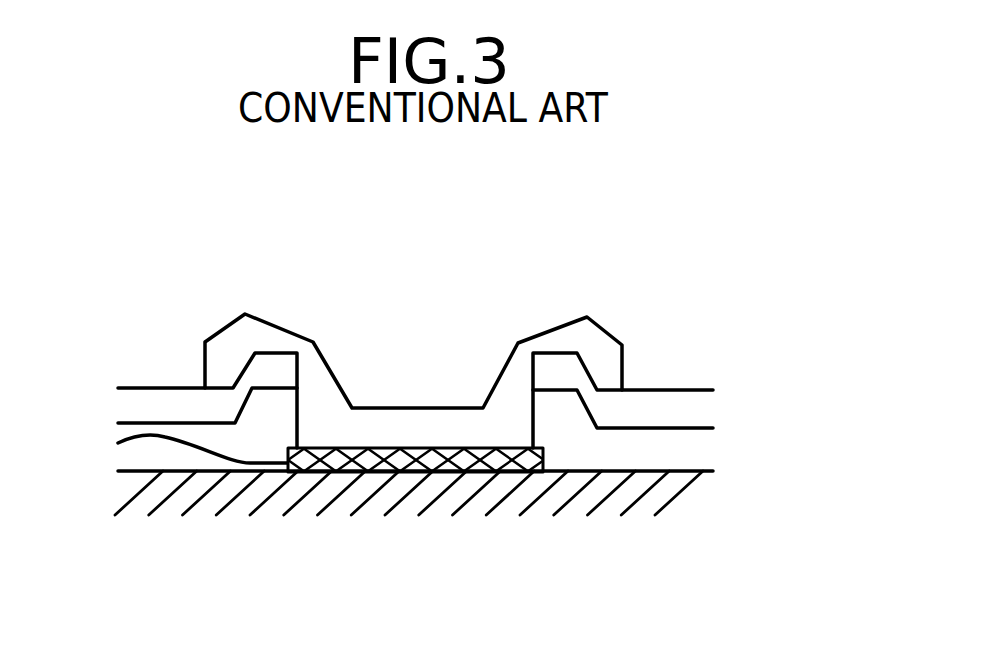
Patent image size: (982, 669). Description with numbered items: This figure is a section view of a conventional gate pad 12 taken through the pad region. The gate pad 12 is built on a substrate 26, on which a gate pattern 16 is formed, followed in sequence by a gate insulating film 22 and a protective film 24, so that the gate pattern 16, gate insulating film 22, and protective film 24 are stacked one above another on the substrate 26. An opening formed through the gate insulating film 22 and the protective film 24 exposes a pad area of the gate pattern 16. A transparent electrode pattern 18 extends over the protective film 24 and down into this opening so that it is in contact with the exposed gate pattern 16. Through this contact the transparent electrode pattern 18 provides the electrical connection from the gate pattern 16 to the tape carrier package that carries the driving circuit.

The gate pad 12 is at (578, 262).
The gate pattern 16 is at (165, 437).
The transparent electrode pattern 18 is at (602, 342).
The gate insulating film 22 is at (697, 460).
The protective film 24 is at (697, 412).
The substrate 26 is at (620, 498).